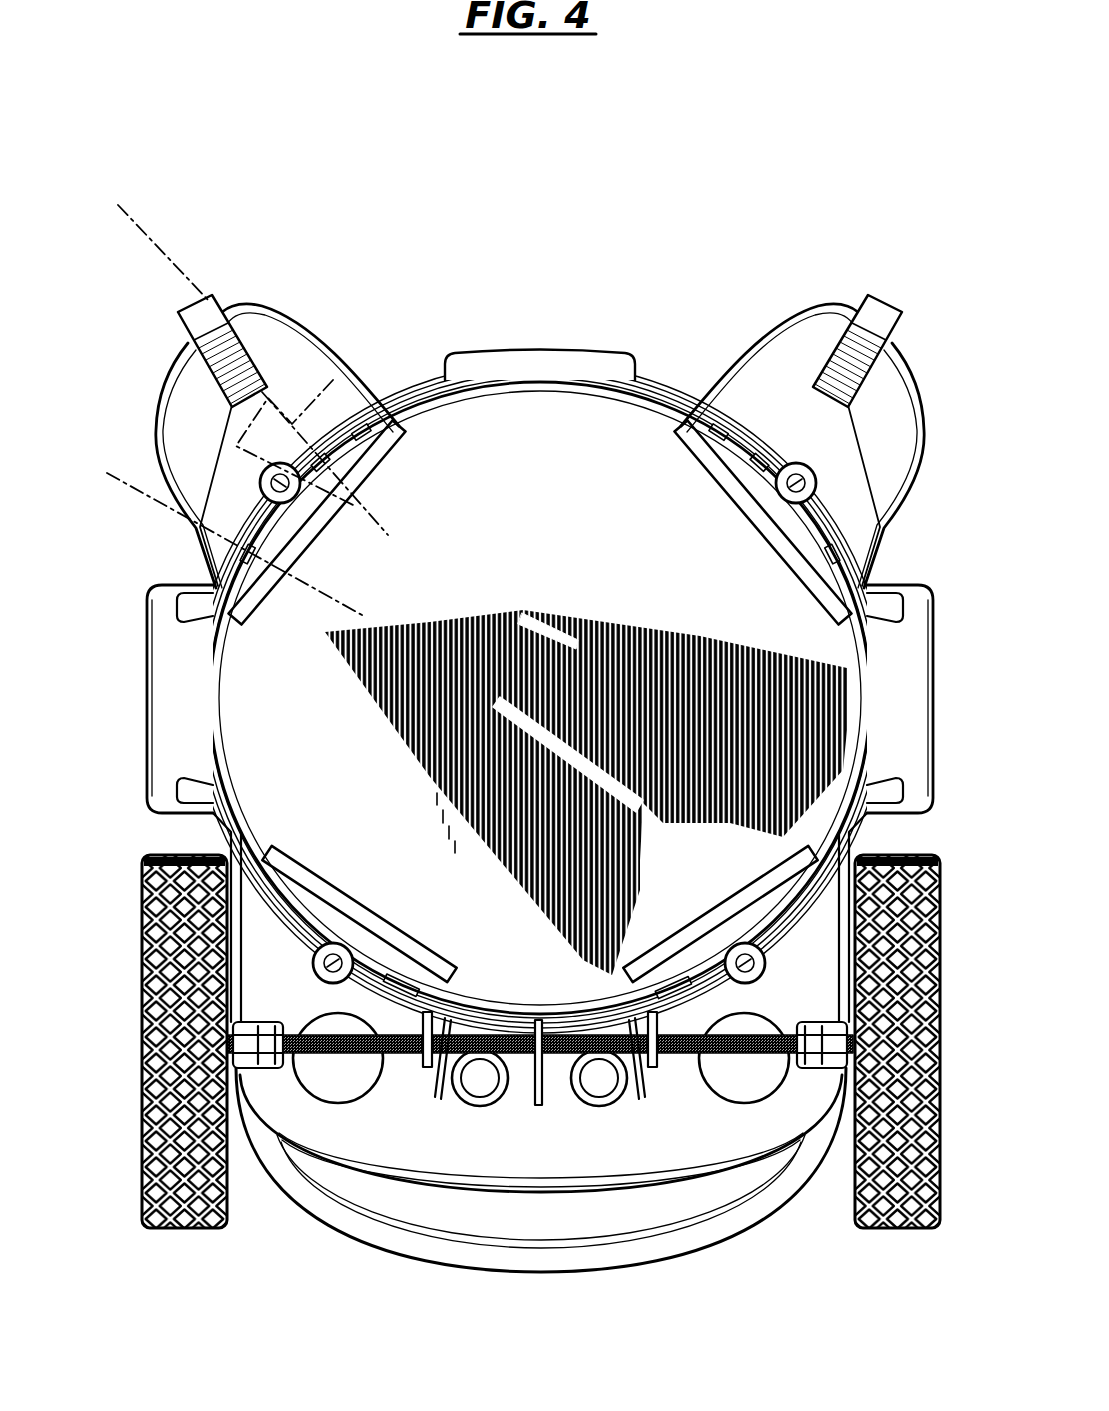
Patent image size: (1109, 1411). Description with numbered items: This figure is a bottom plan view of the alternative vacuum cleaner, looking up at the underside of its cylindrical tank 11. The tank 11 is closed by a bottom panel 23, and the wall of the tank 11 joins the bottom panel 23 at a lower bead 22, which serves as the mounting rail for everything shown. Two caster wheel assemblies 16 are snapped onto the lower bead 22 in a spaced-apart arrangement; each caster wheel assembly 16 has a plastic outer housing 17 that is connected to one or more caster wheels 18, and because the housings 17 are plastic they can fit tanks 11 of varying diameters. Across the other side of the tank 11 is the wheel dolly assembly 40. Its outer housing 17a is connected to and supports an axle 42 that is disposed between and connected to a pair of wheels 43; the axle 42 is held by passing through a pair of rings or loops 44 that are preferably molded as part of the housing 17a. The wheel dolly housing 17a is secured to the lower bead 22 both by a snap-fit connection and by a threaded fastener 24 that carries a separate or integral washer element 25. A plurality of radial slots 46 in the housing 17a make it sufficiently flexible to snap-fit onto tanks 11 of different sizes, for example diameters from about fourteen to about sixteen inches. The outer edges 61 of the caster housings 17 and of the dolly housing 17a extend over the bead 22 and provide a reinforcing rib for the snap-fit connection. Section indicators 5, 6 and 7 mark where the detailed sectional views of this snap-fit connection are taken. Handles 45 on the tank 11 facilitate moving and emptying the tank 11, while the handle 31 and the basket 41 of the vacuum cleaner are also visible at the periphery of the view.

The section line 5- 5 is at (386, 580).
The section line 6- 6 is at (419, 506).
The section line 7- 7 is at (399, 472).
The tank 11 is at (548, 404).
The caster wheel assembly 16 is at (344, 318).
The outer housing 17 is at (294, 314).
The wheel dolly housing 17a is at (330, 1214).
The caster wheel 18 is at (194, 308).
The lower bead 22 is at (211, 792).
The bottom panel 23 is at (515, 529).
The threaded fastener 24 is at (312, 535).
The washer element 25 is at (276, 483).
The handle 31 is at (502, 1269).
The wheel dolly assembly 40 is at (401, 1192).
The basket 41 is at (643, 1213).
The axle 42 is at (532, 1040).
The wheel 43 is at (932, 1047).
The rings or loops 44 is at (270, 1066).
The handles 45 is at (148, 690).
The radial slots 46 is at (420, 1080).
The outer edges 61 is at (438, 404).